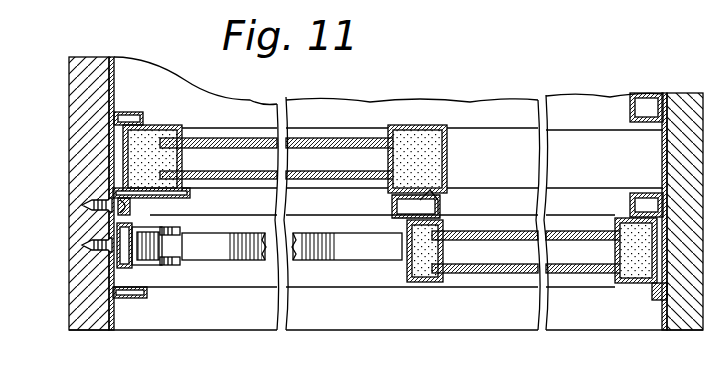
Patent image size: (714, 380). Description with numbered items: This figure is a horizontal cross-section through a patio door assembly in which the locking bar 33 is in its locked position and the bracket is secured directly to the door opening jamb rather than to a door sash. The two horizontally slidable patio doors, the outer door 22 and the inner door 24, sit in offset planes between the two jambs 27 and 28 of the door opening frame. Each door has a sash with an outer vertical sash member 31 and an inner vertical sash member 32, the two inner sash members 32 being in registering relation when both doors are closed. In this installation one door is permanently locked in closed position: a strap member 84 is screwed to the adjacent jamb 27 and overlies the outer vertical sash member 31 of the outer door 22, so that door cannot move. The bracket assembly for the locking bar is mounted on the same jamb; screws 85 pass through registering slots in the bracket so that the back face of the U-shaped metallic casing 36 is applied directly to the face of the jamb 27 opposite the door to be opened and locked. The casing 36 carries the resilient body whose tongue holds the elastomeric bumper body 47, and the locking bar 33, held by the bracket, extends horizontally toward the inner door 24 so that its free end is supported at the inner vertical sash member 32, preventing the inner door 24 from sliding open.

The outer door 22 is at (314, 132).
The inner door 24 is at (589, 280).
The jamb 27 is at (114, 68).
The jamb 28 is at (665, 170).
The outer vertical sash member 31 is at (155, 122).
The inner vertical sash member 32 is at (423, 125).
The locking bar 33 is at (343, 252).
The casing 36 is at (152, 268).
The bumper body 47 is at (175, 266).
The strap member 84 is at (112, 195).
The screws 85 is at (98, 245).